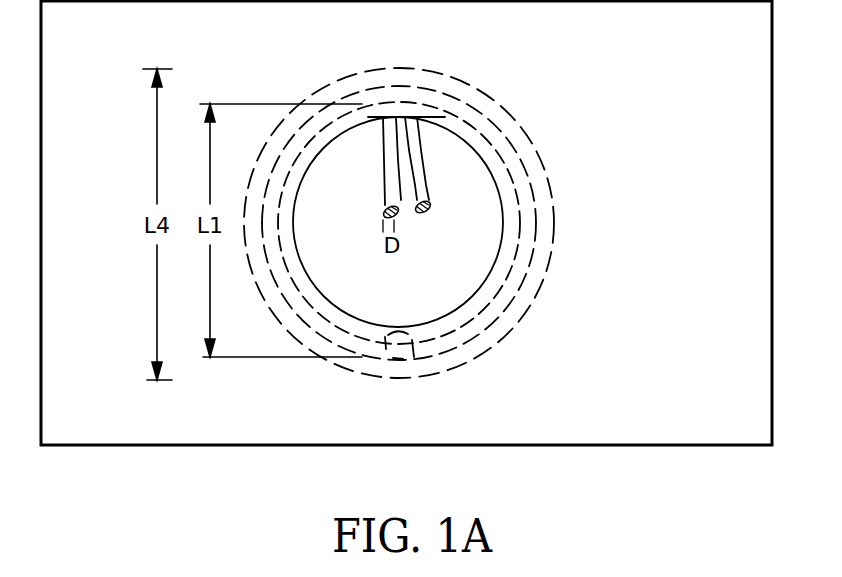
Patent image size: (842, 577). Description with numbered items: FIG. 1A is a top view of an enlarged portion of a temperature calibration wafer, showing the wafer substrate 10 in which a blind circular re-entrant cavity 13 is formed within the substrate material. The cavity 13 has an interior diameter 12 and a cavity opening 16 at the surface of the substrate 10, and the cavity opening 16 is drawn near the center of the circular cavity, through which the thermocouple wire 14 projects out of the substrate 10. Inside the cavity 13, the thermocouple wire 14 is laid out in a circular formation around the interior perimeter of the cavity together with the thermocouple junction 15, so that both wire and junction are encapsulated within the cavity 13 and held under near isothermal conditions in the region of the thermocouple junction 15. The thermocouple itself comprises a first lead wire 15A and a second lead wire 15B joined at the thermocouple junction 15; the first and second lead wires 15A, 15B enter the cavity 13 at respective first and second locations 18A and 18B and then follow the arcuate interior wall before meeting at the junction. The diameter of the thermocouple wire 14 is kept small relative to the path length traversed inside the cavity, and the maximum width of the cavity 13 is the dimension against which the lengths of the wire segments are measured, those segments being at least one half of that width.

The wafer substrate 10 is at (406, 223).
The interior diameter 12 is at (485, 93).
The blind circular re-entrant cavity 13 is at (389, 85).
The thermocouple wire 14 is at (425, 163).
The thermocouple junction 15 is at (417, 340).
The first lead wire 15A is at (508, 307).
The second lead wire 15B is at (300, 295).
The cavity opening 16 is at (503, 227).
The first location 18A is at (383, 140).
The second location 18B is at (420, 133).